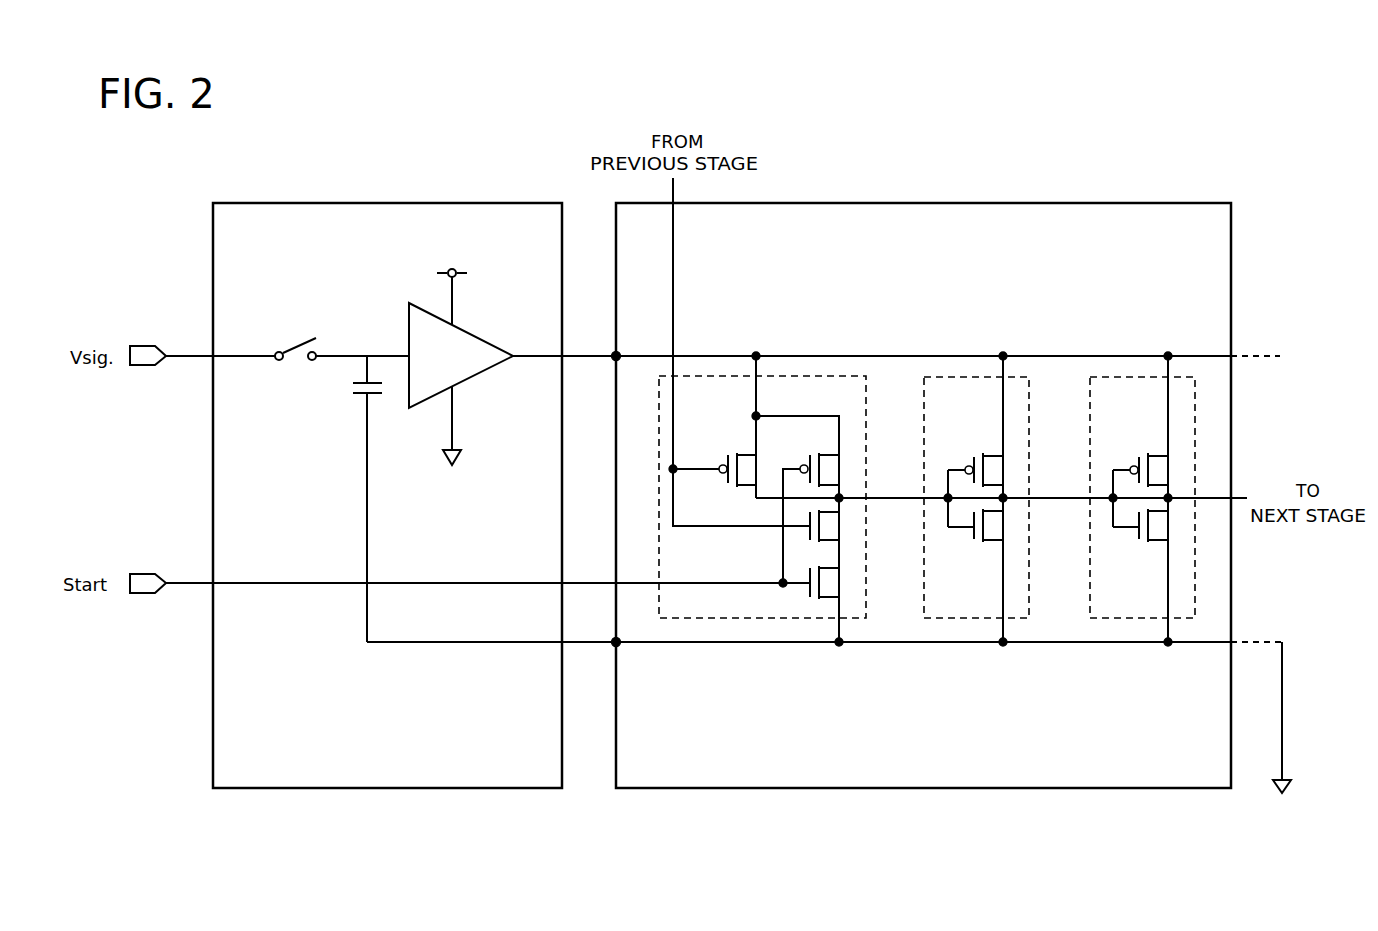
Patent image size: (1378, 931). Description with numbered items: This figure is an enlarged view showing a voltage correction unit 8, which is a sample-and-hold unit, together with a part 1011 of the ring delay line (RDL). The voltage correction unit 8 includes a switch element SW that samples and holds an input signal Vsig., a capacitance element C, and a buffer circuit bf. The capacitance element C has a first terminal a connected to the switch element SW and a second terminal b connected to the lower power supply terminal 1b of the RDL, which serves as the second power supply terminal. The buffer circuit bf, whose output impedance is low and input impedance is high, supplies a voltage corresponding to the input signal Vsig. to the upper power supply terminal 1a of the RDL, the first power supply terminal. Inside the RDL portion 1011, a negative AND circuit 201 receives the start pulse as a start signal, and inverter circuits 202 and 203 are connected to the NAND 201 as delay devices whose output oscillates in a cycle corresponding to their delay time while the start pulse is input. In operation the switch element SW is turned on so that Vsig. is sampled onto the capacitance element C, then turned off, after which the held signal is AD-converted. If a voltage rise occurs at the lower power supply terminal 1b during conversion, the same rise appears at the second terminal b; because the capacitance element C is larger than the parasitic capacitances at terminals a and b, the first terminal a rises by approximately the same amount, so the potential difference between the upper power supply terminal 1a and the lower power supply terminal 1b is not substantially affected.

The voltage correction unit 8 is at (421, 203).
The part of the RDL 1011 is at (1100, 203).
The negative AND circuit (NAND) 201 is at (866, 410).
The inverter circuit (INV) 202 is at (1035, 410).
The inverter circuit (INV) 203 is at (1130, 374).
The upper power supply terminal 1a is at (612, 360).
The lower power supply terminal 1b is at (613, 648).
The buffer circuit bf is at (478, 332).
The switch element SW is at (295, 344).
The capacitance element C is at (358, 499).
The first terminal a is at (382, 371).
The second terminal b is at (382, 409).